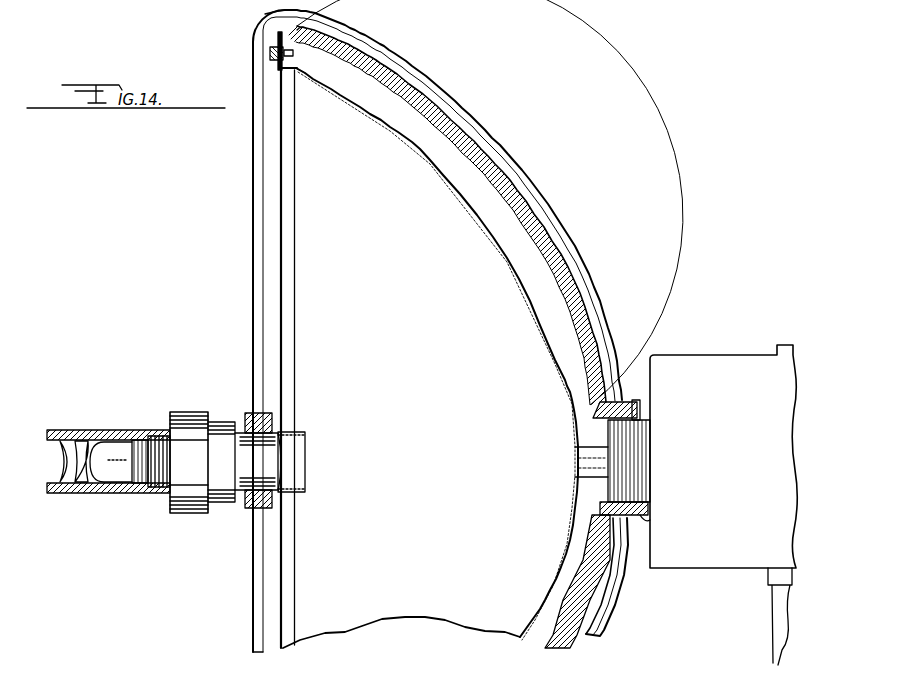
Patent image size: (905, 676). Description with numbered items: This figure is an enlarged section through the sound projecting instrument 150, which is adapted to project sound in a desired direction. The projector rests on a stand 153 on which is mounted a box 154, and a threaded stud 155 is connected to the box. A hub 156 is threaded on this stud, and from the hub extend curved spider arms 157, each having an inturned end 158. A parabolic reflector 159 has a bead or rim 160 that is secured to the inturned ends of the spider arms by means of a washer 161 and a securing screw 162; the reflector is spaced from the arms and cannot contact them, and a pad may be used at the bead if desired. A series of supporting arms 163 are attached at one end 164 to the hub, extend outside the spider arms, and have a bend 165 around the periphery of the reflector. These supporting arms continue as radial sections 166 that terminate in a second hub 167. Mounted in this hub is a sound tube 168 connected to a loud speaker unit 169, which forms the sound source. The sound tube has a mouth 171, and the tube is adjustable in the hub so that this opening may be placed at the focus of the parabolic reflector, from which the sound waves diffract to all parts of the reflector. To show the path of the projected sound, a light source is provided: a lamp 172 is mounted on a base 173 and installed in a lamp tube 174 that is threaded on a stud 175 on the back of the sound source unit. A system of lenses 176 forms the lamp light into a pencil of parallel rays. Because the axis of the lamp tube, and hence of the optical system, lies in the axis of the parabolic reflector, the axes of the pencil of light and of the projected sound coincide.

The sound projecting instrument 150 is at (215, 592).
The stand 153 is at (777, 640).
The box 154 is at (747, 333).
The threaded stud 155 is at (632, 434).
The hub 156 is at (633, 402).
The curved spider arms 157 is at (577, 330).
The inturned end 158 is at (300, 65).
The parabolic reflector 159 is at (514, 264).
The bead or rim 160 is at (289, 72).
The washer 161 is at (275, 50).
The securing screw 162 is at (272, 55).
The supporting arms 163 is at (566, 152).
The end 164 is at (641, 516).
The bend 165 is at (283, 18).
The radial sections 166 is at (255, 243).
The hub 167 is at (248, 508).
The sound tube 168 is at (247, 442).
The loud speaker unit 169 is at (193, 407).
The mouth 171 is at (305, 454).
The lamp 172 is at (112, 447).
The base 173 is at (140, 492).
The lamp tube 174 is at (92, 492).
The stud 175 is at (156, 433).
The system of lenses 176 is at (67, 447).